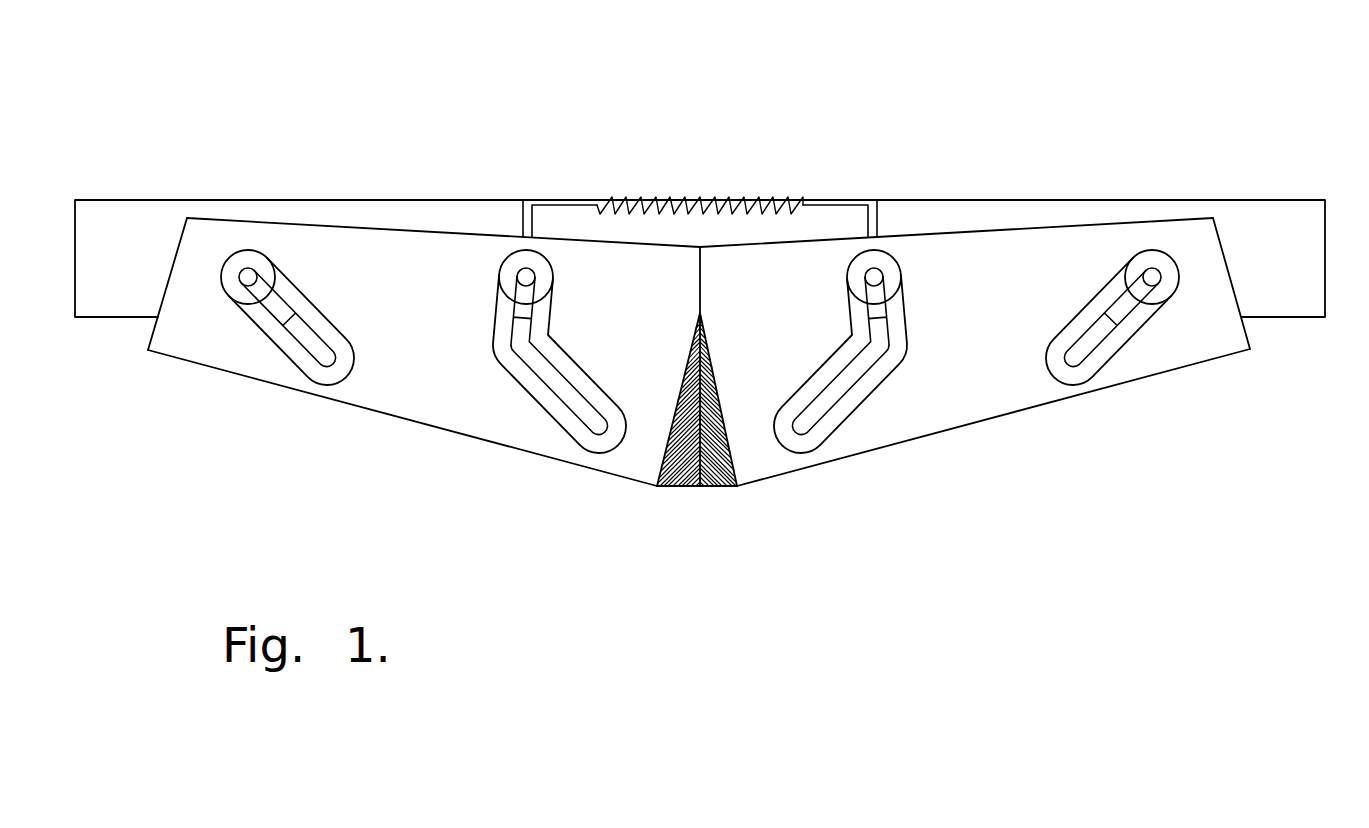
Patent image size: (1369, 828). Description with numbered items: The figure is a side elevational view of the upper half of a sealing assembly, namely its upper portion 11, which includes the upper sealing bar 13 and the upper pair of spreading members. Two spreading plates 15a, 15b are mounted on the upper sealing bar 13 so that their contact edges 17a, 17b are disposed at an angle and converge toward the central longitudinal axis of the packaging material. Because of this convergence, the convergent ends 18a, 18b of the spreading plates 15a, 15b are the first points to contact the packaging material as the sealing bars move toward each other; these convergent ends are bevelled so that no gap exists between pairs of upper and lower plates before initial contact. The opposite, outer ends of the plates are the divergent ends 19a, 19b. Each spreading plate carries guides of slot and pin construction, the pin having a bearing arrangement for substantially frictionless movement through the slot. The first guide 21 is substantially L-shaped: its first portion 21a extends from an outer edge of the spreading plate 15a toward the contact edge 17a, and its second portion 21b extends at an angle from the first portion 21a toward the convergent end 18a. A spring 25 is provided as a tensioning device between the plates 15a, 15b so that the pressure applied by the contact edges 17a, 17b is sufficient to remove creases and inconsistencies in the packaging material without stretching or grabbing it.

The upper portion 11 is at (1282, 192).
The upper sealing bar 13 is at (420, 213).
The spreading plate 15a is at (458, 405).
The spreading plate 15b is at (939, 403).
The contact edge 17a is at (377, 412).
The contact edge 17b is at (1020, 413).
The convergent end 18a is at (648, 467).
The convergent end 18b is at (753, 468).
The divergent end 19a is at (162, 345).
The divergent end 19b is at (1235, 345).
The first guide 21 is at (532, 250).
The first portion 21a is at (533, 325).
The second portion 21b is at (510, 385).
The spring 25 is at (692, 193).